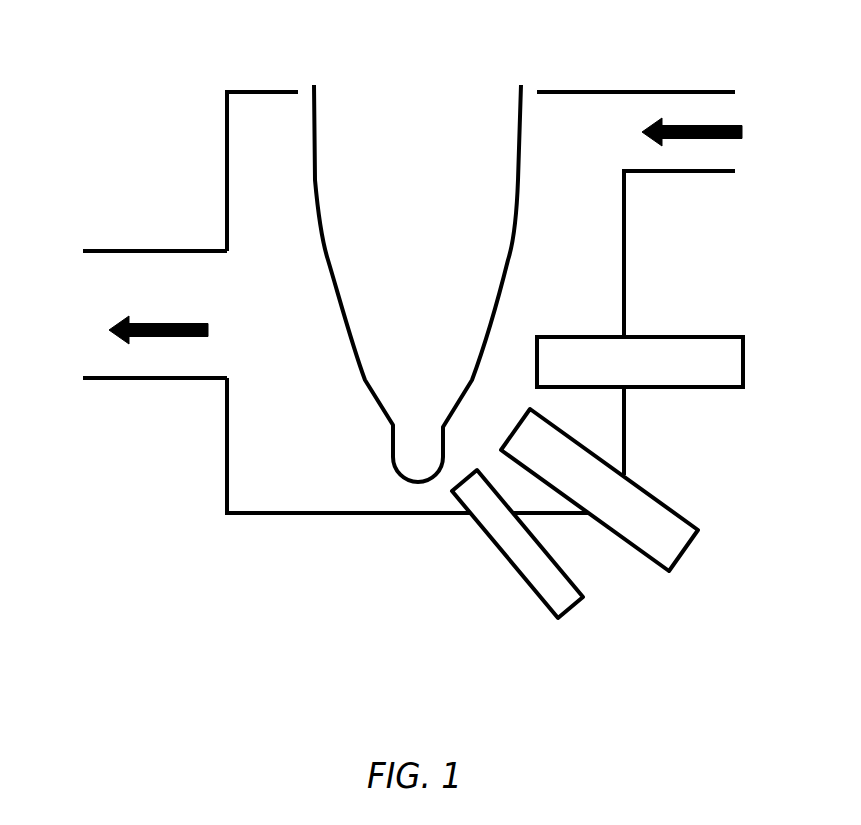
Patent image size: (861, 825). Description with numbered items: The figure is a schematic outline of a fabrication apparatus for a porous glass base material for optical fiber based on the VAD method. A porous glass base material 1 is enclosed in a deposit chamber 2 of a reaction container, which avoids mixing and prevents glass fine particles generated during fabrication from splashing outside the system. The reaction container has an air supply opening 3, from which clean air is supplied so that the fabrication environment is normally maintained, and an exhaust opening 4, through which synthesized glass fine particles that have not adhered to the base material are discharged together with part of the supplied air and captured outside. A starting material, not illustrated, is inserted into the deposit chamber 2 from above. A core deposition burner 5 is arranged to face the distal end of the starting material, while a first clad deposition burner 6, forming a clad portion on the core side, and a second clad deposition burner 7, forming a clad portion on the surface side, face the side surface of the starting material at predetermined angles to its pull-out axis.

The porous glass base material 1 is at (467, 119).
The deposit chamber 2 is at (257, 176).
The air supply opening 3 is at (698, 120).
The exhaust opening 4 is at (153, 287).
The core deposition burner 5 is at (510, 548).
The first clad deposition burner 6 is at (613, 508).
The second clad deposition burner 7 is at (633, 367).